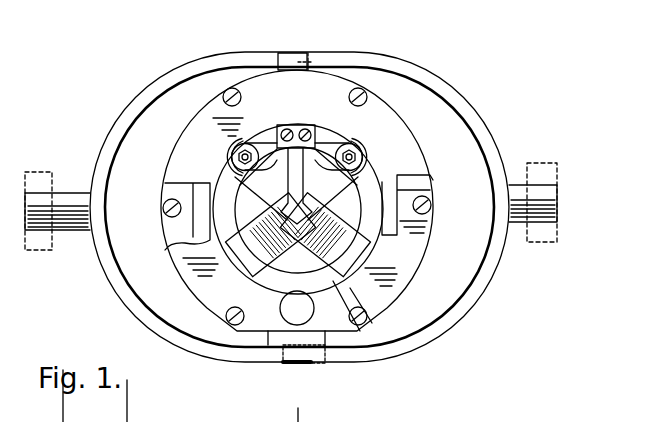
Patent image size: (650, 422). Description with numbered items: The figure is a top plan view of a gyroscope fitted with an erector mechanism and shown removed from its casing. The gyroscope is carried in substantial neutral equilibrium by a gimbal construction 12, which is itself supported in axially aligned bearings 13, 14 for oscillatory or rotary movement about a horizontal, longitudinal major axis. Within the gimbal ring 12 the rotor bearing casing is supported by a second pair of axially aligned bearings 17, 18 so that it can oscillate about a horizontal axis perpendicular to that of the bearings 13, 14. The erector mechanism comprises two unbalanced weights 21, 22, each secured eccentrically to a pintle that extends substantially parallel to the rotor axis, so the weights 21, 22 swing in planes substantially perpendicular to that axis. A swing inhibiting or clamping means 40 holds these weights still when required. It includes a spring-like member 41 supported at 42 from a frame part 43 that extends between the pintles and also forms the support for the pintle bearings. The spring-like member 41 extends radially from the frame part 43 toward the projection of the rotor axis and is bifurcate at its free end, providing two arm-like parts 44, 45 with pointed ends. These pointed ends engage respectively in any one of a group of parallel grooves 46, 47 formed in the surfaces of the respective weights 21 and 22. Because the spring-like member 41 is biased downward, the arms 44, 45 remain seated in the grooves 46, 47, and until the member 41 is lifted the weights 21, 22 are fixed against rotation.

The gimbal construction 12 is at (433, 84).
The bearing 13 is at (548, 173).
The bearing 14 is at (42, 172).
The bearing 17 is at (313, 352).
The bearing 18 is at (311, 62).
The weight 21 is at (233, 180).
The weight 22 is at (343, 178).
The swing inhibiting or clamping means 40 is at (304, 122).
The spring-like member 41 is at (352, 146).
The support 42 is at (262, 172).
The frame part 43 is at (258, 141).
The arm-like part 44 is at (325, 211).
The arm-like part 45 is at (280, 216).
The grooves 46 is at (343, 220).
The grooves 47 is at (271, 235).